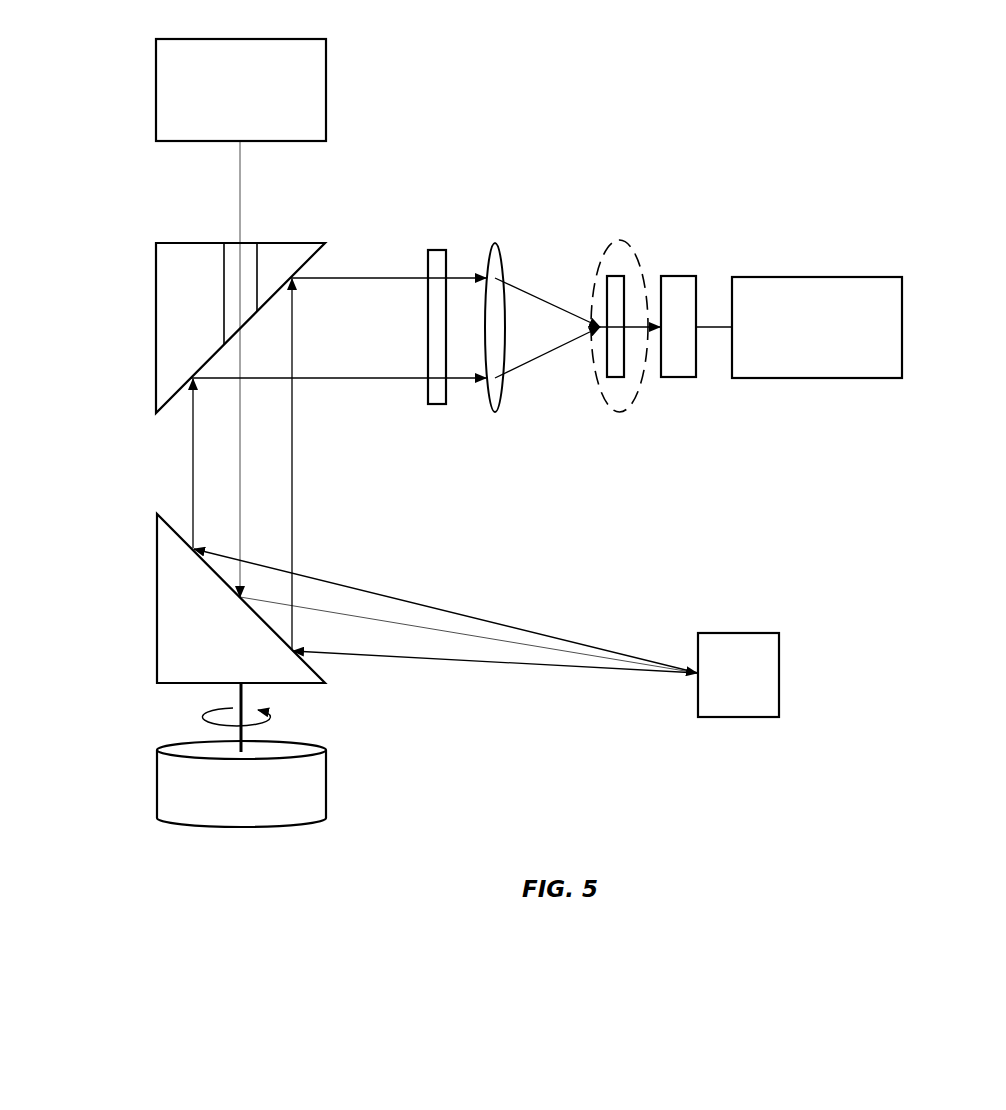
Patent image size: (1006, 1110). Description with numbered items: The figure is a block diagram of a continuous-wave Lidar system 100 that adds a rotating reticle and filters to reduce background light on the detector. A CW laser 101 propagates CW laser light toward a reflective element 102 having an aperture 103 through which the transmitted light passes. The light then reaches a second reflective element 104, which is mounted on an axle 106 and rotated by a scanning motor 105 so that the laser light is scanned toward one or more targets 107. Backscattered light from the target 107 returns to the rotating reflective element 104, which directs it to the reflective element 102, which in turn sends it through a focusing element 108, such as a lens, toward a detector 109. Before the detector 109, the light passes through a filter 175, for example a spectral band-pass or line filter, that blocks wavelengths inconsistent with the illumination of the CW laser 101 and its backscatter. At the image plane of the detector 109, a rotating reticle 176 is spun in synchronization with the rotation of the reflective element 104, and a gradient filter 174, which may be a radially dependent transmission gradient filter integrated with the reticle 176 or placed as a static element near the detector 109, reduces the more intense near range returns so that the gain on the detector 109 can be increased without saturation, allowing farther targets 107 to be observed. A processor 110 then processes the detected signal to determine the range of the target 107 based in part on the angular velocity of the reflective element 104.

The CW Lidar system 100 is at (884, 126).
The CW laser 101 is at (241, 90).
The reflective element 102 is at (182, 243).
The aperture 103 is at (250, 267).
The reflective element 104 is at (157, 570).
The scanning motor 105 is at (157, 790).
The axle 106 is at (238, 740).
The target 107 is at (738, 675).
The focusing element 108 is at (502, 260).
The detector 109 is at (679, 275).
The processor 110 is at (817, 327).
The gradient filter 174 is at (632, 378).
The filter 175 is at (447, 250).
The rotating reticle 176 is at (615, 275).